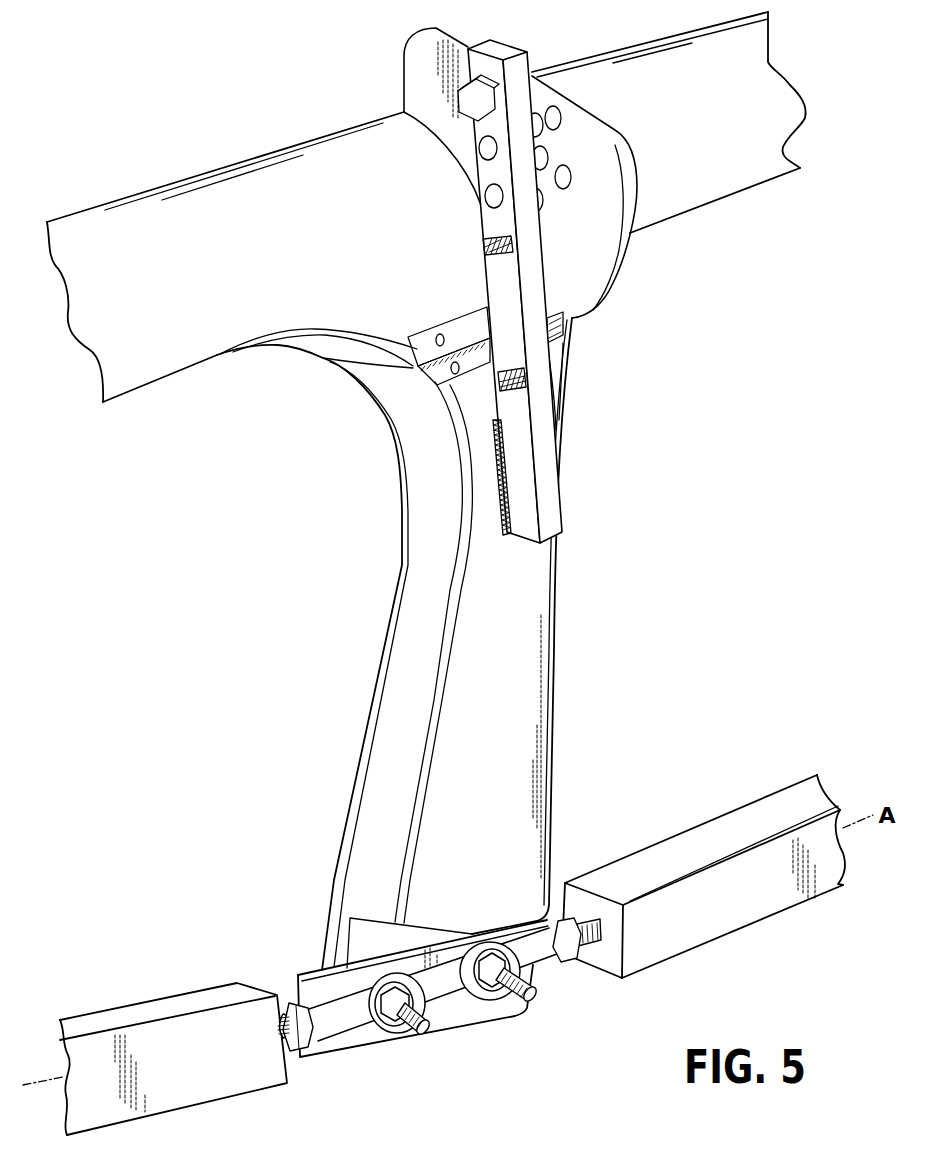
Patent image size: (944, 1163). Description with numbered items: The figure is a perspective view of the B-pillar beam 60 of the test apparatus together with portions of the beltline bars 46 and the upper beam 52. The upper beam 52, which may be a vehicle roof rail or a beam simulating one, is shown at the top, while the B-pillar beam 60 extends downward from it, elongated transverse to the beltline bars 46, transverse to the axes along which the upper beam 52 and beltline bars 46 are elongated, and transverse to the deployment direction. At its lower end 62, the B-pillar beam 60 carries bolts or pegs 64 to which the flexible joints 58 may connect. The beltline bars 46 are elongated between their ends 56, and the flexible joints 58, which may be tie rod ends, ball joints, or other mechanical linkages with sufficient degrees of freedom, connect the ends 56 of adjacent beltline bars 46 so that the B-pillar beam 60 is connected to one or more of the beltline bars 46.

The beltline bar 46 is at (163, 1005).
The upper beam 52 is at (216, 357).
The end 56 is at (288, 1085).
The flexible joint 58 is at (387, 1040).
The B-pillar beam 60 is at (353, 812).
The end 62 is at (330, 935).
The bolts or pegs 64 is at (430, 1038).